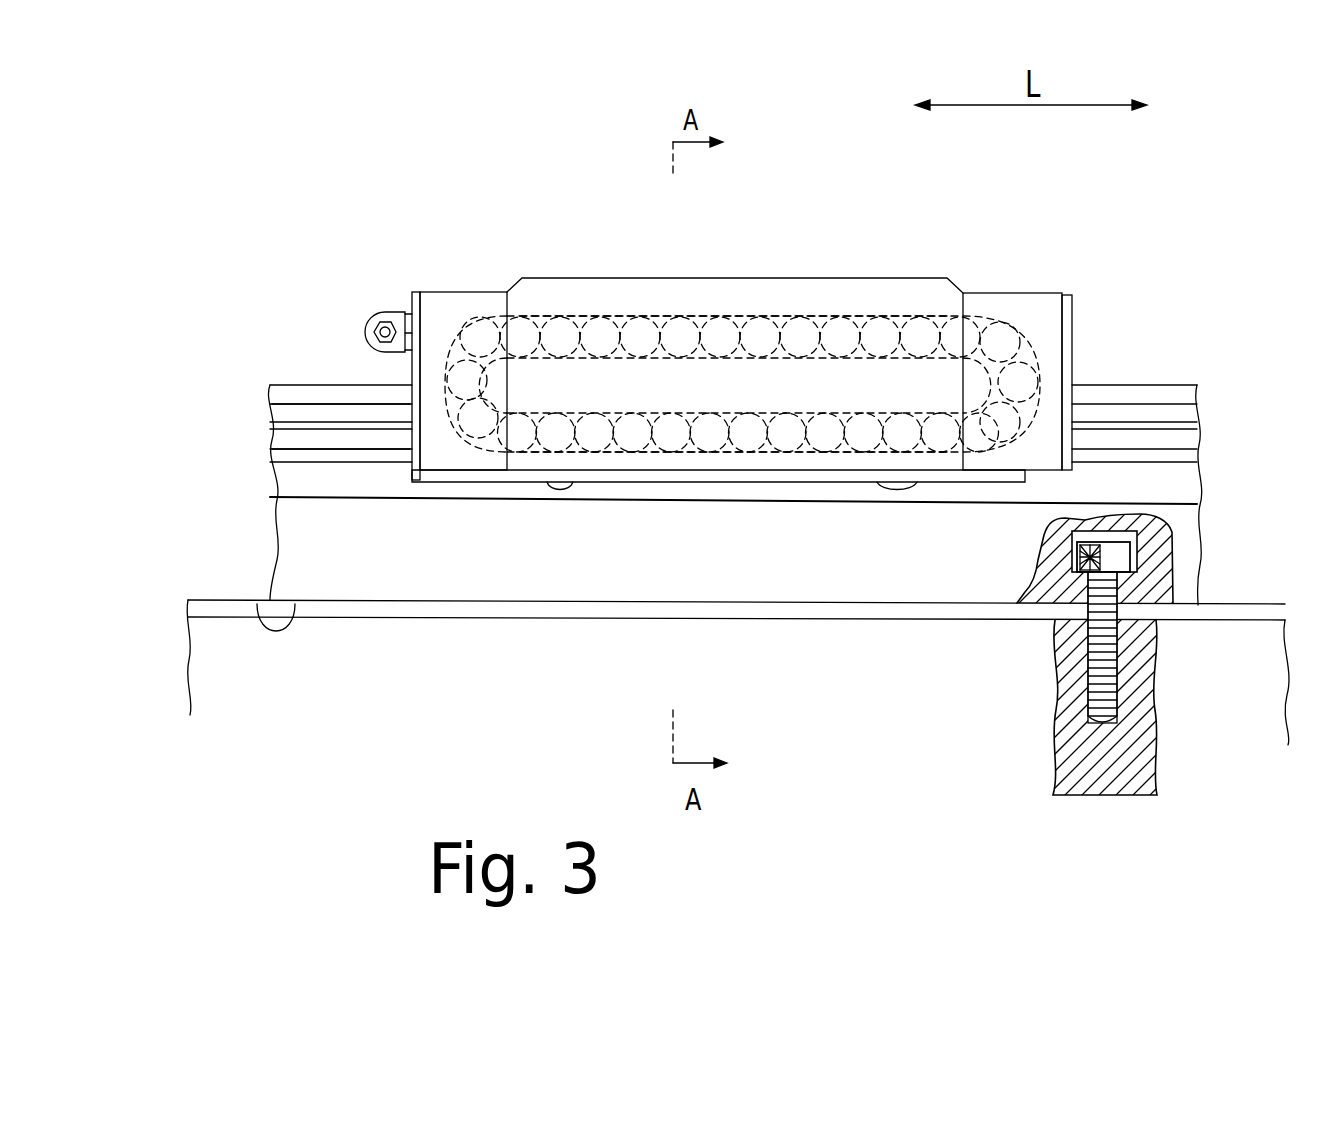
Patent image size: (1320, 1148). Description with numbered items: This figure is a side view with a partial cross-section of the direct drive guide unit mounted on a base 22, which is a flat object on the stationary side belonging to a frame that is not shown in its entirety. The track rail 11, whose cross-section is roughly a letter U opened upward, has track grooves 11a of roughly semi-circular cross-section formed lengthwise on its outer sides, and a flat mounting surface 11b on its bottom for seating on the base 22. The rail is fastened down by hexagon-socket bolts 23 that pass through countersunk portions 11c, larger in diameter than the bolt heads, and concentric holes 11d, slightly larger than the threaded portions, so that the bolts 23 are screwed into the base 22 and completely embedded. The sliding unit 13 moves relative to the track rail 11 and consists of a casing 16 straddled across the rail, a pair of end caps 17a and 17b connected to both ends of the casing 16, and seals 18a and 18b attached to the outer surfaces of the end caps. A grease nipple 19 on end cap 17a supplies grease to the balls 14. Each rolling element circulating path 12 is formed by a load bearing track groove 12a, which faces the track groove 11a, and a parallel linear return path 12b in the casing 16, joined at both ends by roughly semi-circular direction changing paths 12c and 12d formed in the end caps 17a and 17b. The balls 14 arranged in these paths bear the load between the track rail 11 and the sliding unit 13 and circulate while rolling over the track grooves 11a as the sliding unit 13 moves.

The track rail 11 is at (1188, 385).
The track grooves 11a is at (313, 447).
The mounting surface 11b is at (253, 617).
The countersunk portions 11c is at (1157, 618).
The holes 11d is at (1098, 592).
The rolling element circulating path 12 is at (693, 312).
The load bearing track groove 12a is at (788, 446).
The return path 12b is at (800, 330).
The direction changing path 12c is at (453, 378).
The direction changing path 12d is at (1018, 345).
The sliding unit 13 is at (900, 278).
The balls 14 is at (557, 315).
The casing 16 is at (772, 290).
The end cap 17a is at (468, 303).
The end cap 17b is at (1013, 305).
The seal 18a is at (417, 290).
The seal 18b is at (1070, 305).
The grease nipple 19 is at (383, 308).
The base 22 is at (1262, 630).
The bolts 23 is at (1082, 690).